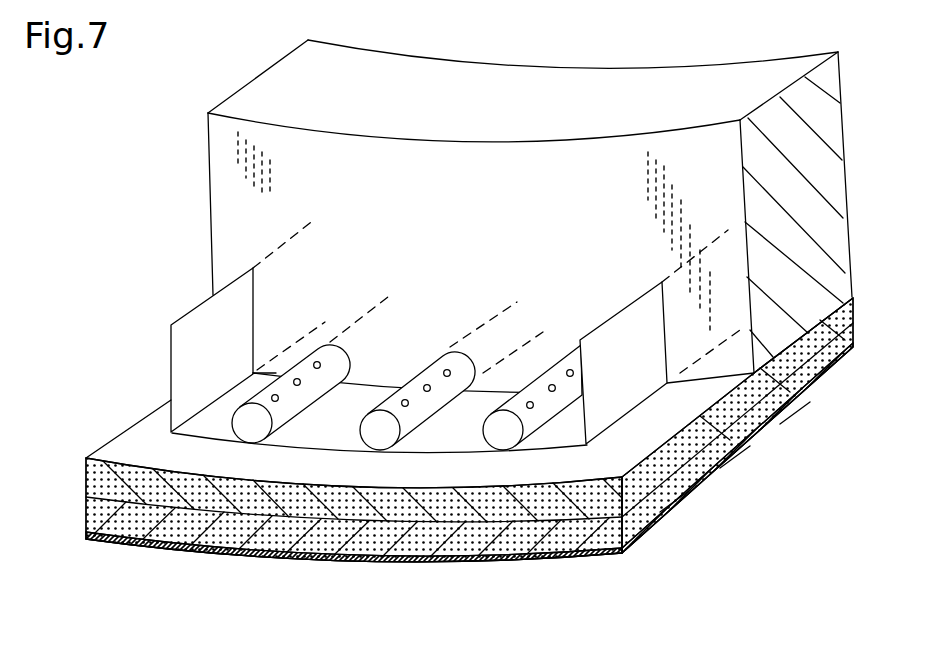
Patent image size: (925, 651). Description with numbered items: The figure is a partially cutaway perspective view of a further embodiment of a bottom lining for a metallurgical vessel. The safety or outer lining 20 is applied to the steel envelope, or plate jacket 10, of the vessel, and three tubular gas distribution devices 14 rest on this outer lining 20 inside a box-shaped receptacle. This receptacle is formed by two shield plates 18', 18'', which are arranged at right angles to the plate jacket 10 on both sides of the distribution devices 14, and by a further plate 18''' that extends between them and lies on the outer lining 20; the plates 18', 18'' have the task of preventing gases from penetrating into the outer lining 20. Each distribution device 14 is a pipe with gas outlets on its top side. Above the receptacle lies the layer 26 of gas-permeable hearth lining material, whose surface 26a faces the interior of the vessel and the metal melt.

The steel envelope 10 is at (547, 547).
The gas distribution device 14 is at (287, 407).
The plate 18' is at (223, 321).
The plate 18'' is at (623, 335).
The plate 18''' is at (416, 364).
The outer lining 20 is at (367, 527).
The layer 26 is at (238, 165).
The surface 26a is at (434, 81).